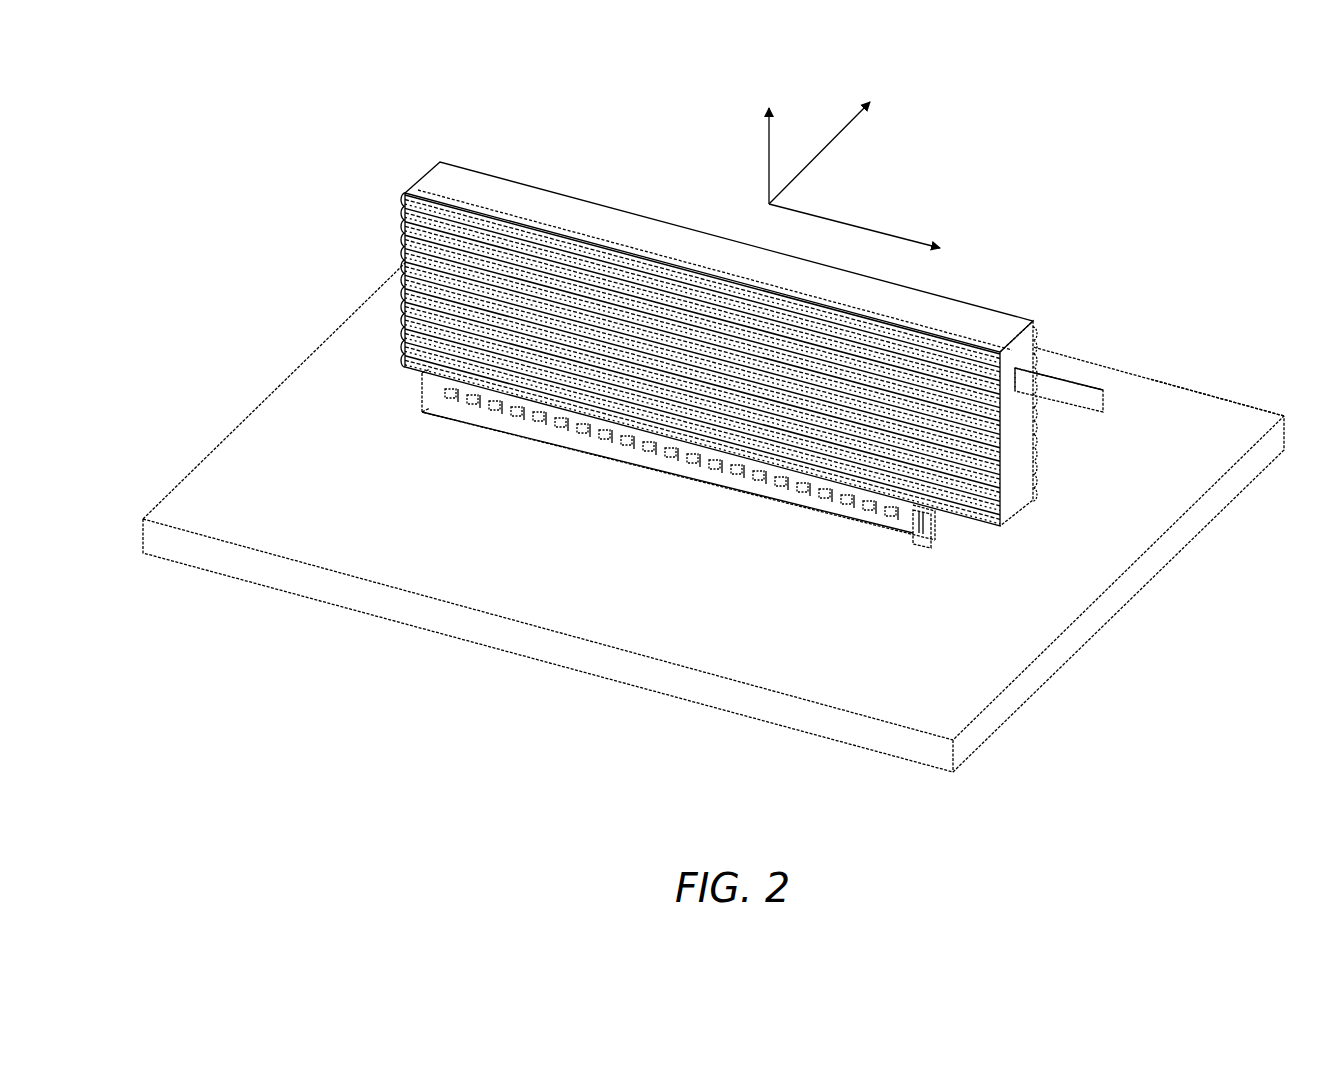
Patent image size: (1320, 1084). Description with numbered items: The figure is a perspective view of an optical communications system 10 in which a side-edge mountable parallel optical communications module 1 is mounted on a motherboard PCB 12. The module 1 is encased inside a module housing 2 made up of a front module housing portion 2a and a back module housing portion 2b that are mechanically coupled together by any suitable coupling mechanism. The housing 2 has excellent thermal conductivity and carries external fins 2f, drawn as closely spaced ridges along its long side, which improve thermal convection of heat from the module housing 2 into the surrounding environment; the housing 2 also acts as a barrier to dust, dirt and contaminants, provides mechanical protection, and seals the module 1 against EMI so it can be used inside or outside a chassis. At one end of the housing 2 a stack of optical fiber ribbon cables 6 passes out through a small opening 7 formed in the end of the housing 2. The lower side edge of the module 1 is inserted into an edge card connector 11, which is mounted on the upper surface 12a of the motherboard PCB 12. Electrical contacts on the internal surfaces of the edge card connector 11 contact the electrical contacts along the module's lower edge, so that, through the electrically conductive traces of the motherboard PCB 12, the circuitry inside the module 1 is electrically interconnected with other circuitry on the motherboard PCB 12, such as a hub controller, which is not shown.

The side-edge mountable parallel optical communications module 1 is at (578, 190).
The module housing 2 is at (1006, 300).
The front module housing portion 2a is at (454, 190).
The back module housing portion 2b is at (484, 175).
The external fins 2f is at (422, 270).
The optical fiber ribbon cables 6 is at (1083, 398).
The opening 7 is at (1020, 368).
The optical communications system 10 is at (1122, 191).
The edge card connector 11 is at (930, 532).
The motherboard PCB 12 is at (1215, 492).
The upper surface 12a is at (1180, 420).